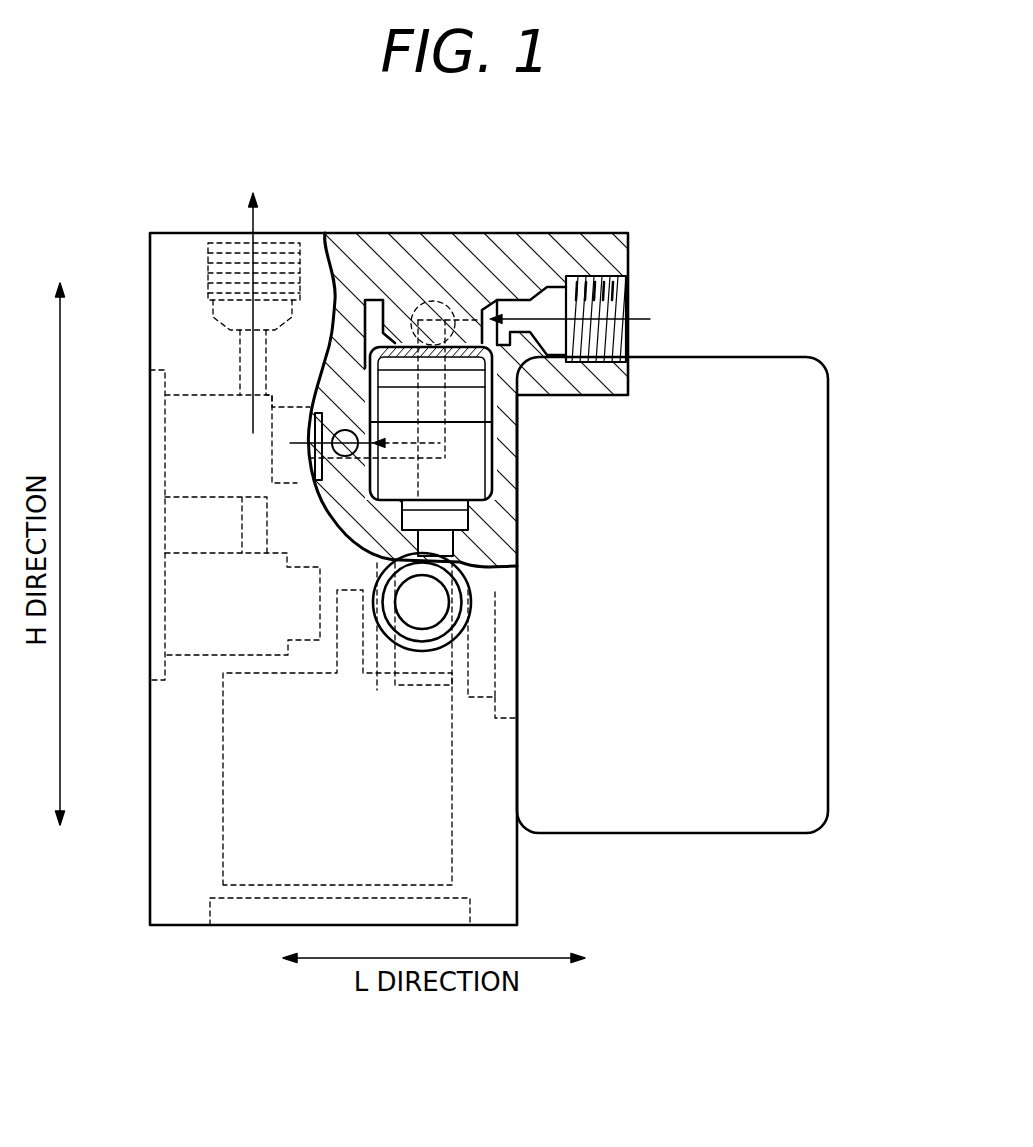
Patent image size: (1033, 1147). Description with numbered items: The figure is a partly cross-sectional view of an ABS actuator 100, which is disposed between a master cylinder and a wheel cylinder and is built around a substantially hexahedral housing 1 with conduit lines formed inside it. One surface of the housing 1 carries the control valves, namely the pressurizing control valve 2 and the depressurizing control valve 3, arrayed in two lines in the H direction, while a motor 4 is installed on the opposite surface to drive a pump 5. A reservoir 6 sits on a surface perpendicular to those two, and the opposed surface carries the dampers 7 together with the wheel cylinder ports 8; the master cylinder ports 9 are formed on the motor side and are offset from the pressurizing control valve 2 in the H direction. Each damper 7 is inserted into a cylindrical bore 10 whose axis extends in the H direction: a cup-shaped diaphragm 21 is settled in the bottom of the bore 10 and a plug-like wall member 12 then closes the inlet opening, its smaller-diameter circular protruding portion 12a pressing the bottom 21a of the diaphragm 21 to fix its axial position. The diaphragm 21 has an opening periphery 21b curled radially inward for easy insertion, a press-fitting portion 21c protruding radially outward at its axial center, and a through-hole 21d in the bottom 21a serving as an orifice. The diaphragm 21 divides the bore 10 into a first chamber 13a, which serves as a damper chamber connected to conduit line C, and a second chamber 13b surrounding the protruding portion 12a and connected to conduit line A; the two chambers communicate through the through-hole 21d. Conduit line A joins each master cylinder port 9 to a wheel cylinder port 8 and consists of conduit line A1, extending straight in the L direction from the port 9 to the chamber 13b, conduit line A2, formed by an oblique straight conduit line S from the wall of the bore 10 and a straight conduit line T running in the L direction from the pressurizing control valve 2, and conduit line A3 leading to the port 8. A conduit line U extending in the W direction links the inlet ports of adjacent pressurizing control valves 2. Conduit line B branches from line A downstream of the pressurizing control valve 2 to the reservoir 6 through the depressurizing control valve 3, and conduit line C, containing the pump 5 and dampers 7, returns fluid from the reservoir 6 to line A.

The housing 1 is at (150, 752).
The pressurizing control valve 2 is at (193, 389).
The depressurizing control valve 3 is at (199, 553).
The motor 4 is at (828, 553).
The pump 5 is at (472, 606).
The reservoir 6 is at (452, 862).
The damper 7 is at (492, 212).
The wheel cylinder port 8 is at (208, 263).
The master cylinder port 9 is at (613, 270).
The bore 10 is at (311, 250).
The plug-like wall member 12 is at (445, 262).
The circular protruding portion 12a is at (396, 272).
The first chamber 13a is at (463, 483).
The second chamber 13b is at (352, 268).
The cup-shaped diaphragm 21 is at (509, 292).
The bottom 21a is at (456, 400).
The opening periphery 21b is at (517, 422).
The press-fitting portion 21c is at (408, 278).
The through-hole 21d is at (482, 332).
The ABS actuator 100 is at (133, 229).
The conduit line A is at (345, 427).
The conduit line A1 is at (544, 262).
The conduit line A2 is at (312, 474).
The conduit line A3 is at (240, 381).
The conduit line B is at (236, 521).
The conduit line C is at (462, 543).
The conduit line S is at (336, 341).
The conduit line T is at (330, 505).
The conduit line U is at (307, 470).